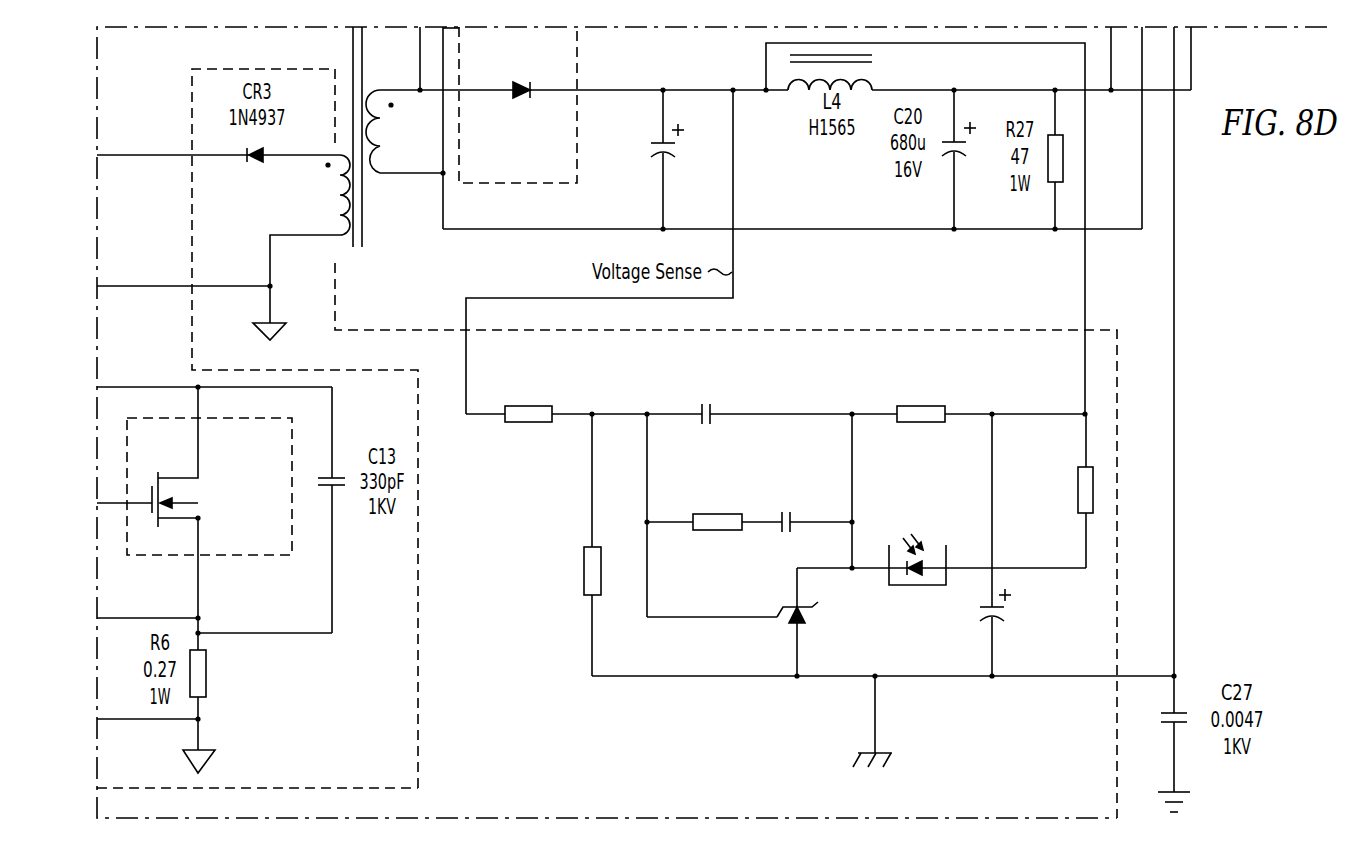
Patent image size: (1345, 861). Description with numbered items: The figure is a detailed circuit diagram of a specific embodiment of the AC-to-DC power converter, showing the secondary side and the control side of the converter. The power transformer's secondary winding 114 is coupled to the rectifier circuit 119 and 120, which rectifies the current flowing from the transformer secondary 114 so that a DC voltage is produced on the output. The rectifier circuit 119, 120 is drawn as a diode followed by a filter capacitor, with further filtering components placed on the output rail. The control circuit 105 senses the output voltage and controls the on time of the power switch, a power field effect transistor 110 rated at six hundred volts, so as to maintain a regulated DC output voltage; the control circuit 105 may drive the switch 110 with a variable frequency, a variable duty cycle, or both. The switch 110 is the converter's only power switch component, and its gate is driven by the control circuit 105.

The control circuit 105 is at (718, 817).
The power field effect transistor 110 is at (232, 556).
The secondary winding 114 is at (382, 193).
The rectifier circuit 119 is at (518, 105).
The rectifier circuit 120 is at (672, 158).